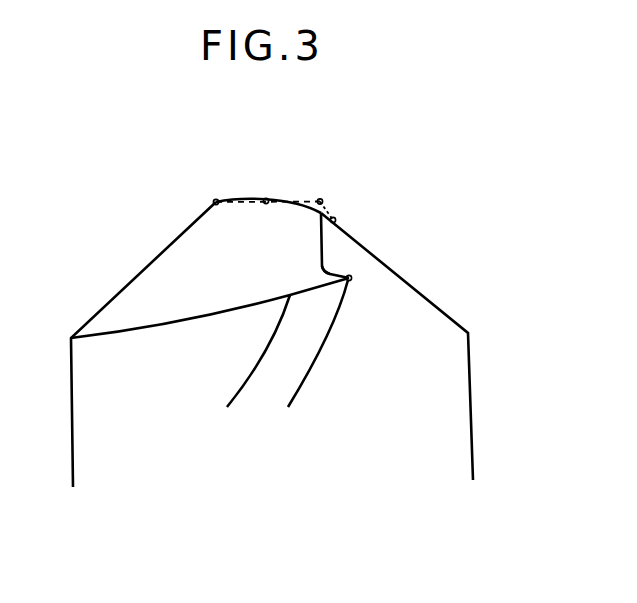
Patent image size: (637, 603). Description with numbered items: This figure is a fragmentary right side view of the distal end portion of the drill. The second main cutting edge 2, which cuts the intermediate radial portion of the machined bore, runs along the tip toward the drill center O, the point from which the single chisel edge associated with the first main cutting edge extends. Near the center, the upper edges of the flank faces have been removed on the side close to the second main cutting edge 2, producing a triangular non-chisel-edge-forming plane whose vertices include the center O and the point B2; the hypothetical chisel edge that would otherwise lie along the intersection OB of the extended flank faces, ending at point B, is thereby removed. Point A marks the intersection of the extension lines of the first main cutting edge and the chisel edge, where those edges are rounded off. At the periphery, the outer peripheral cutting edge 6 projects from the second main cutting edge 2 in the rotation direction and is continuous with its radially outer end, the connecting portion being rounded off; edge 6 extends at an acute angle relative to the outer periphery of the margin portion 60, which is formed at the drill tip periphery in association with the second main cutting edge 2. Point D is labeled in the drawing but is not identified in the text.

The second main cutting edge 2 is at (323, 240).
The outer peripheral cutting edge 6 is at (333, 270).
The margin portion 60 is at (317, 295).
The intersection of extension lines of the first main cutting edge and chisel edge A is at (204, 187).
The center of the distal end of the drill O is at (274, 186).
The end point of the hypothetical chisel edge B is at (329, 186).
The vertex of the triangular non-chisel-edge-forming plane B2 is at (311, 234).
The point D is at (358, 294).